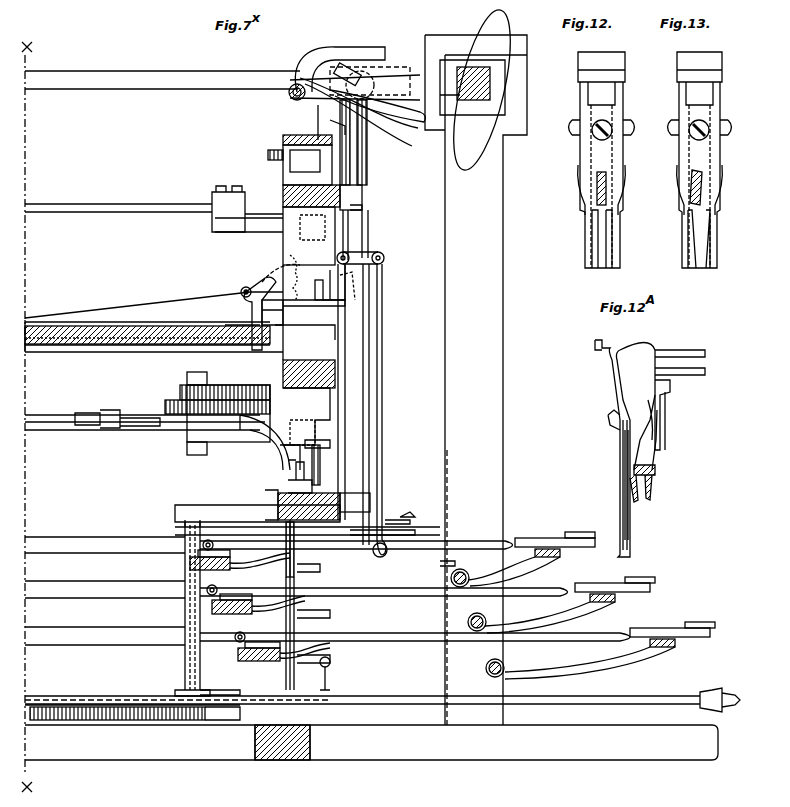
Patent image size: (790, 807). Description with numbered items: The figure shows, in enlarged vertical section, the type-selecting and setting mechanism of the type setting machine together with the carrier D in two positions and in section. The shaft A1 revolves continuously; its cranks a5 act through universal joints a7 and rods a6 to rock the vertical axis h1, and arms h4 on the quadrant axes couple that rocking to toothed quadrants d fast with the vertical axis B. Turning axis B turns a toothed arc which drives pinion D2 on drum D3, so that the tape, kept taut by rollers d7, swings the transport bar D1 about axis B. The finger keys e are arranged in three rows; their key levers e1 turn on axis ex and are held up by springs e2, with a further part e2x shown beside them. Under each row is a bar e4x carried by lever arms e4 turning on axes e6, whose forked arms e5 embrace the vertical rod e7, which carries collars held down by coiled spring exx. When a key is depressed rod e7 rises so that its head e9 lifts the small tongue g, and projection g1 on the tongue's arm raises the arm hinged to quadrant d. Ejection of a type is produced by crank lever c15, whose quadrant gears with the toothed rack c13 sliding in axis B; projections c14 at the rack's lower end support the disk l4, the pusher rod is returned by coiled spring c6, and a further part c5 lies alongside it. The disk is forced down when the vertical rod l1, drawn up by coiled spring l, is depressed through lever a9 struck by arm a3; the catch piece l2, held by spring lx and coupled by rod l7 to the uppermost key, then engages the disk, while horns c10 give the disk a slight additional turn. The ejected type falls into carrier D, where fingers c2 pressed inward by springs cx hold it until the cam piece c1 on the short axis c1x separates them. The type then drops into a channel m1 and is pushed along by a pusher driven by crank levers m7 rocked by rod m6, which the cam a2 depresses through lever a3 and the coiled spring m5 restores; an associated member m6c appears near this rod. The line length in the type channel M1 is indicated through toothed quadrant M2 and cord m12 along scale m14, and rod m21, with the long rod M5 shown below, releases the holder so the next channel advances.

In FIG. 7X, the rod a6 is at (50, 80).
In FIG. 7X, the universal joint a7 is at (328, 52).
In FIG. 7X, the crank a5 is at (374, 81).
In FIG. 7X, the lever a3 is at (410, 163).
In FIG. 7X, the lever a9 is at (428, 132).
In FIG. 7X, the cam a2 is at (481, 90).
In FIG. 7X, the shaft A1 is at (478, 98).
In FIG. 7X, the vertical axis B is at (283, 178).
In FIG. 7X, the coiled spring l is at (340, 120).
In FIG. 7X, the coiled spring m5 is at (367, 165).
In FIG. 7X, the rod m6 is at (366, 224).
In FIG. 7X, the spring lx is at (368, 337).
In FIG. 7X, the rod l7 is at (384, 458).
In FIG. 7X, the disk l4 is at (330, 294).
In FIG. 7X, the vertical rod l1 is at (340, 330).
In FIG. 7X, the catch piece l2 is at (340, 286).
In FIG. 7X, the projections c14 is at (284, 314).
In FIG. 7X, the crank lever c15 is at (268, 280).
In FIG. 7X, the toothed rack c13 is at (301, 277).
In FIG. 7X, the horns c10 is at (236, 315).
In FIG. 7X, the rail c5 is at (192, 338).
In FIG. 7X, the coiled spring c6 is at (130, 335).
In FIG. 7X, the vertical axis h1 is at (70, 210).
In FIG. 7X, the arms h4 is at (232, 237).
In FIG. 7X, the toothed quadrants d is at (180, 388).
In FIG. 7X, the pinion D2 is at (168, 410).
In FIG. 7X, the double wheel or drum D3 is at (156, 437).
In FIG. 7X, the rollers d7 is at (85, 403).
In FIG. 7X, the transport bar D1 is at (255, 418).
In FIG. 7X, the small tongue g is at (280, 455).
In FIG. 7X, the projection g1 is at (312, 438).
In FIG. 7X, the head e9 is at (290, 476).
In FIG. 7X, the vertical rod e7 is at (275, 490).
In FIG. 7X, the type channel M1 is at (307, 520).
In FIG. 7X, the type channel m1 is at (417, 508).
In FIG. 7X, the scale m14 is at (412, 522).
In FIG. 7X, the cord m12 is at (416, 533).
In FIG. 7X, the coiled spring exx is at (296, 551).
In FIG. 7X, the key levers e1 is at (64, 543).
In FIG. 7X, the axis ex is at (214, 545).
In FIG. 7X, the springs e2 is at (235, 612).
In FIG. 7X, the springs e2x is at (280, 615).
In FIG. 7X, the lever arms e5 is at (342, 582).
In FIG. 7X, the member m6 m6c is at (385, 563).
In FIG. 7X, the rod m21 is at (222, 695).
In FIG. 7X, the crank levers m7 is at (332, 672).
In FIG. 7X, the finger keys e is at (536, 542).
In FIG. 7X, the bar e4x is at (562, 555).
In FIG. 7X, the lever arms e4 is at (510, 568).
In FIG. 7X, the axes e6 is at (458, 585).
In FIG. 7X, the rod M5 is at (595, 697).
In FIG. 7X, the toothed quadrant M2 is at (105, 721).
In FIG. 12, the carrier or receptacle D is at (620, 78).
In FIG. 13, the carrier or receptacle D is at (720, 62).
In FIG. 12A, the carrier or receptacle D is at (612, 374).
In FIG. 12, the cam piece c1 is at (607, 180).
In FIG. 13, the cam piece c1 is at (698, 206).
In FIG. 12A, the cam piece c1 is at (658, 446).
In FIG. 12, the springs cx is at (578, 188).
In FIG. 13, the springs cx is at (677, 188).
In FIG. 12, the fingers c2 is at (594, 240).
In FIG. 13, the fingers c2 is at (688, 254).
In FIG. 12A, the fingers c2 is at (612, 458).
In FIG. 12A, the short axis c1x is at (656, 472).